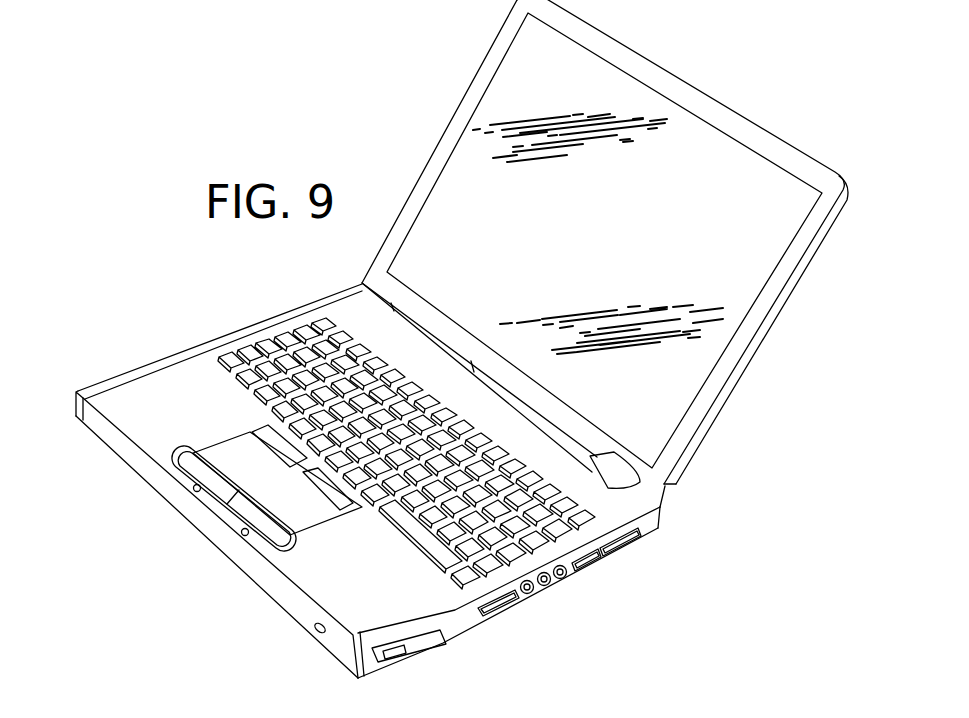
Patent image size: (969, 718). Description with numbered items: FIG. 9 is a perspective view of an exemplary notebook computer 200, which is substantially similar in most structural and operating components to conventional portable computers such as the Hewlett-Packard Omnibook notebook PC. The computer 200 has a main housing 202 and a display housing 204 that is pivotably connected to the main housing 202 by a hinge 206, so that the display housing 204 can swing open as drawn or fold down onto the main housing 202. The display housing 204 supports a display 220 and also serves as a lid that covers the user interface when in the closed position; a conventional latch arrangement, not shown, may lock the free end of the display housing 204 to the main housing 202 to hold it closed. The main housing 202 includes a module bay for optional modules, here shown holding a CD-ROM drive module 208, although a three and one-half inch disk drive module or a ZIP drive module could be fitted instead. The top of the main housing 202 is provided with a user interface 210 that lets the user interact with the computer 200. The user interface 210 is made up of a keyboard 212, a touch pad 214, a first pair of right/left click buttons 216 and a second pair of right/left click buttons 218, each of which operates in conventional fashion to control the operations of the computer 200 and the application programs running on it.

The notebook computer 200 is at (254, 303).
The main housing 202 is at (163, 477).
The display housing 204 is at (473, 103).
The hinge 206 is at (632, 488).
The CD-ROM drive module 208 is at (305, 618).
The user interface 210 is at (168, 373).
The keyboard 212 is at (462, 594).
The touch pad 214 is at (225, 452).
The first pair of right/left click buttons 216 is at (262, 426).
The second pair of right/left click buttons 218 is at (252, 552).
The display 220 is at (613, 118).